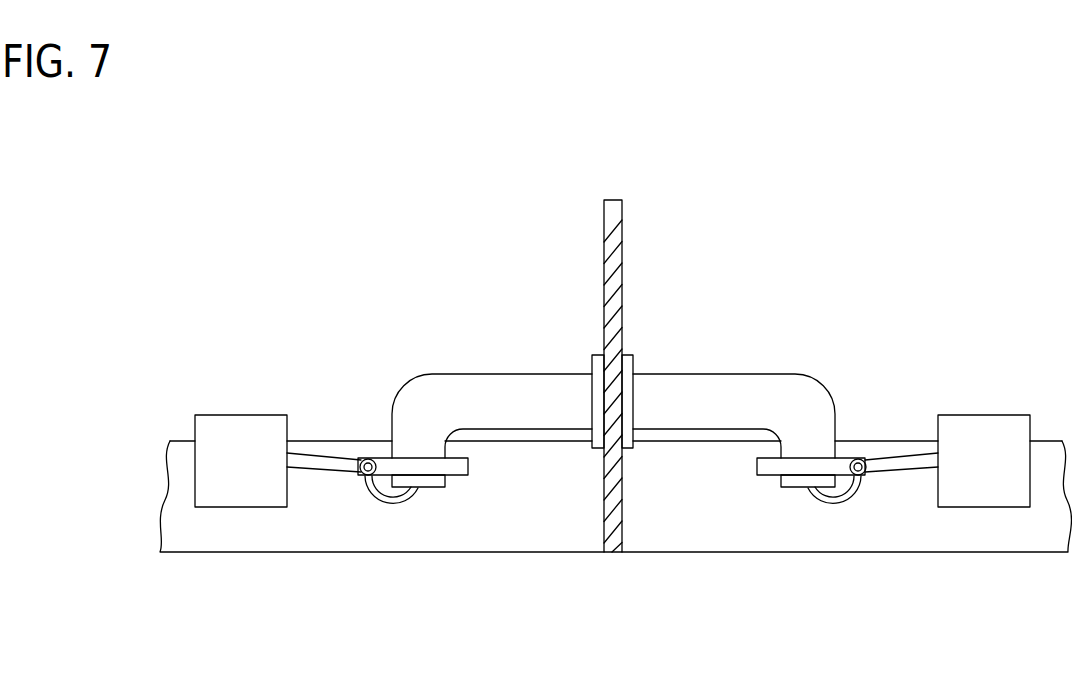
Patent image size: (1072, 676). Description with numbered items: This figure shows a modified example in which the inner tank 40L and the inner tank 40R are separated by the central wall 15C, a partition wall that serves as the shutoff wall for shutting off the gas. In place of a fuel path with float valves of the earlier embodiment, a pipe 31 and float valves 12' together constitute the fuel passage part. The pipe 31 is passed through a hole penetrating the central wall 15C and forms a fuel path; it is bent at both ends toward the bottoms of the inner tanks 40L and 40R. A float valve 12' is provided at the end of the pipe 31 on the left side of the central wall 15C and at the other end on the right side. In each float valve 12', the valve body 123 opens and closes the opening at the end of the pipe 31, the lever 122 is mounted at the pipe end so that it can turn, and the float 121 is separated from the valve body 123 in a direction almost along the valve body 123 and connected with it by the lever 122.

The central wall 15C is at (622, 210).
The inner tank 40L is at (452, 209).
The inner tank 40R is at (857, 209).
The pipe 31 is at (707, 373).
The float valve 12' is at (612, 385).
The float 121 is at (243, 415).
The lever 122 is at (331, 471).
The valve body 123 is at (431, 488).